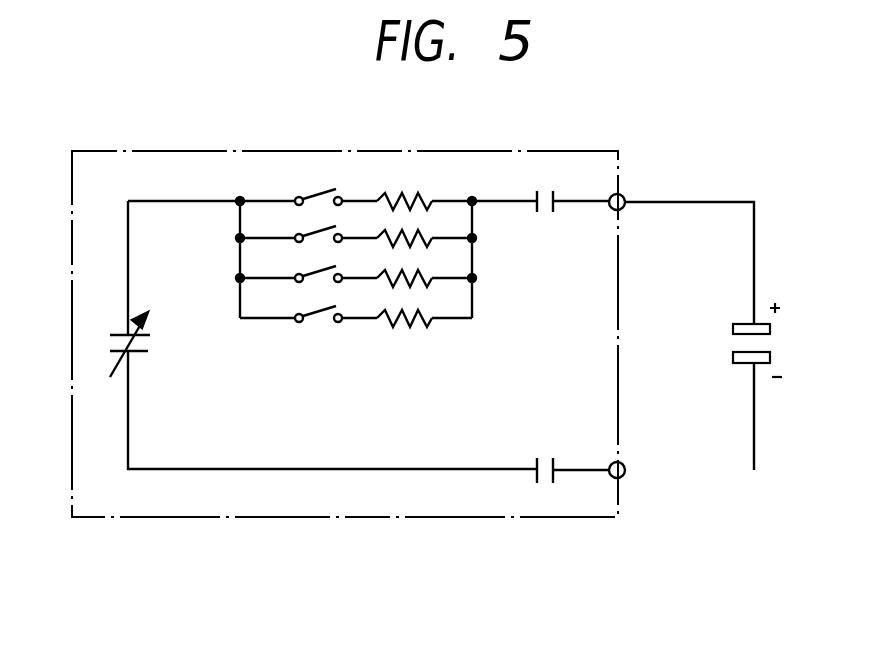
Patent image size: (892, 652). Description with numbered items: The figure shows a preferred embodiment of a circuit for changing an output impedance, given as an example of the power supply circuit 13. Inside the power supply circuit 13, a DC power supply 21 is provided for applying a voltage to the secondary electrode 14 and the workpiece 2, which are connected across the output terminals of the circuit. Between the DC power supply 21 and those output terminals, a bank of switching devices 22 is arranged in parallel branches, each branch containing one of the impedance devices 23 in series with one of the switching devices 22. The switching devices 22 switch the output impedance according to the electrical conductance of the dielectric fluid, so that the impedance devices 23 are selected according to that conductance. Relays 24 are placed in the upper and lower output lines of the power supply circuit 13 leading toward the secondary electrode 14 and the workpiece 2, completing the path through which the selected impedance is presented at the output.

The workpiece 2 is at (738, 365).
The power supply circuit 13 is at (270, 517).
The secondary electrode 14 is at (740, 322).
The DC power supply 21 is at (146, 345).
The switching devices 22 is at (324, 188).
The impedance devices 23 is at (410, 186).
The relays 24 is at (540, 215).